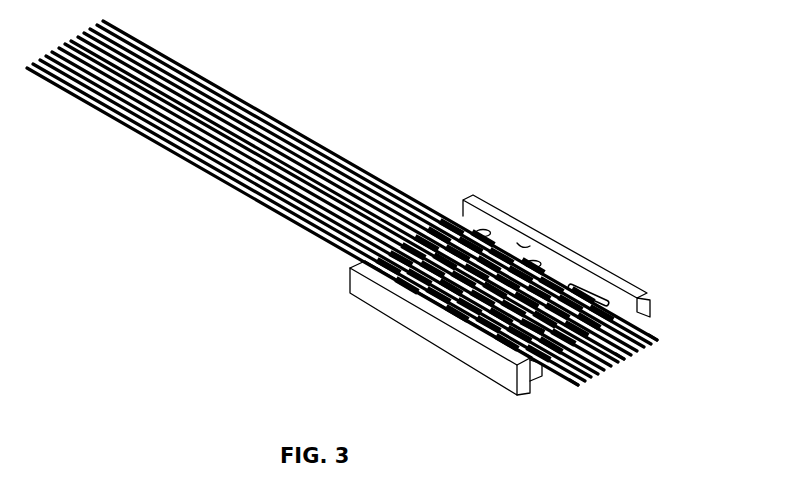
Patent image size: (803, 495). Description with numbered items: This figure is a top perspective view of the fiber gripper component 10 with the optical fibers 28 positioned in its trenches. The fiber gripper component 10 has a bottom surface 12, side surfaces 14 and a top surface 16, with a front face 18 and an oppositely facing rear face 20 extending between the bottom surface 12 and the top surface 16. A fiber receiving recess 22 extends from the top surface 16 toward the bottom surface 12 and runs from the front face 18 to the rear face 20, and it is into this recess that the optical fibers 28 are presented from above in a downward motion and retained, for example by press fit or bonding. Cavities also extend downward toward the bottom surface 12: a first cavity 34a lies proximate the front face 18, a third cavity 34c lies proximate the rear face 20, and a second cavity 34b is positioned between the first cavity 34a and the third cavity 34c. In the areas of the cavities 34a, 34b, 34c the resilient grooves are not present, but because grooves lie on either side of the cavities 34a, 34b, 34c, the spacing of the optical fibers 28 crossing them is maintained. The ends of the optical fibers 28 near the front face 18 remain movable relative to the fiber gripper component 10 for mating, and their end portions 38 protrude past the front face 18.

The fiber gripper component 10 is at (576, 185).
The bottom surface 12 is at (420, 335).
The side surfaces 14 is at (483, 362).
The top surface 16 is at (592, 273).
The front face 18 is at (542, 380).
The rear face 20 is at (349, 282).
The fiber receiving recess 22 is at (528, 247).
The optical fibers 28 is at (196, 118).
The first cavity 34a is at (602, 296).
The second cavity 34b is at (537, 262).
The third cavity 34c is at (483, 228).
The end portions 38 is at (661, 343).